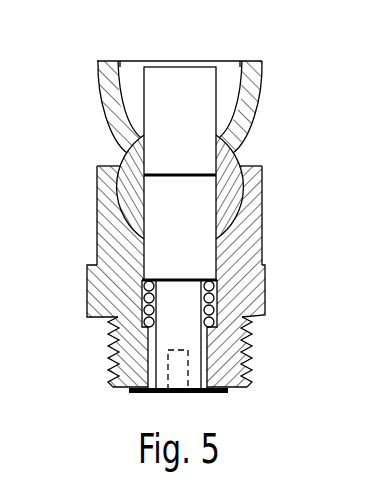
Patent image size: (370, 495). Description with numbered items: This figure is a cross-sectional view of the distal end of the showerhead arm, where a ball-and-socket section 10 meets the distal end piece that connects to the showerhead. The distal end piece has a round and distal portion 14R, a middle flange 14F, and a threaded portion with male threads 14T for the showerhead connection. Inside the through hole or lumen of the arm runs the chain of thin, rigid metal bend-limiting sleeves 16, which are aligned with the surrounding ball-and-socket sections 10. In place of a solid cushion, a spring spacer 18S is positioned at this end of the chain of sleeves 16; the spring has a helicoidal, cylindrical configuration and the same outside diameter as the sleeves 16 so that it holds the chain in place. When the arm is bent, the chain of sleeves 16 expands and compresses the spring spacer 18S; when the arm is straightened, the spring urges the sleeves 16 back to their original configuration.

The ball-and-socket section 10 is at (95, 82).
The bend-limiting sleeve 16 is at (178, 73).
The round distal portion 14R is at (97, 197).
The middle flange 14F is at (266, 268).
The male threads 14T is at (112, 350).
The spring spacer 18S is at (218, 317).